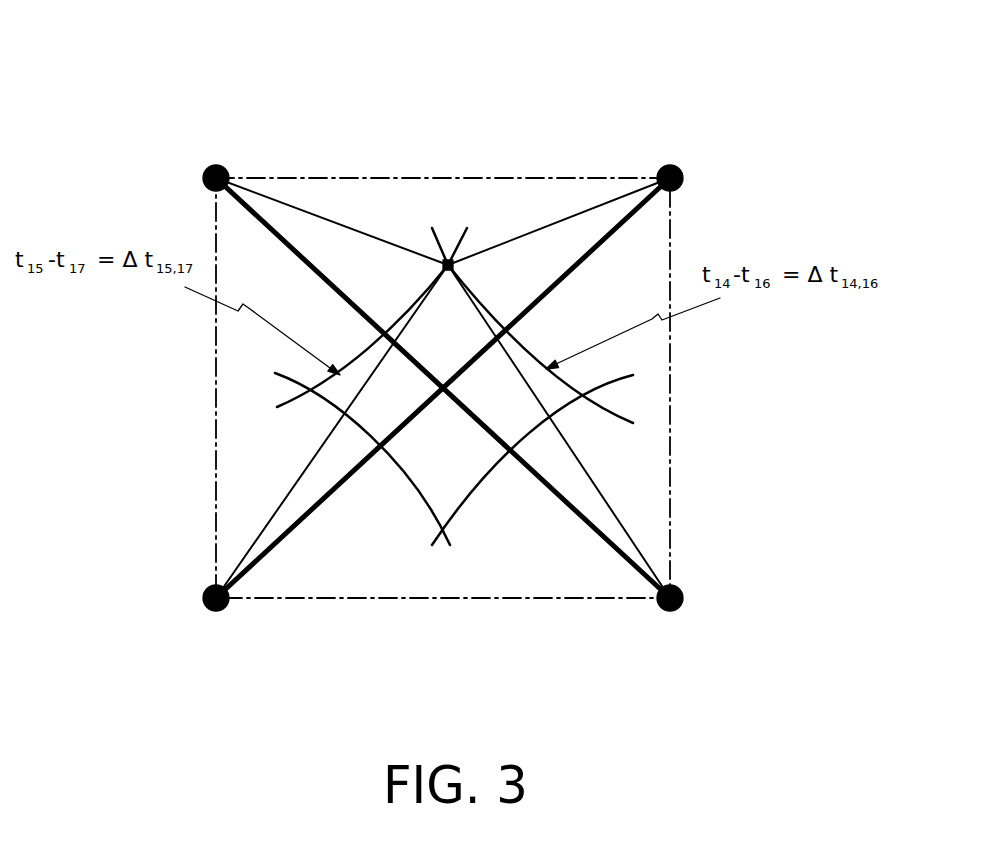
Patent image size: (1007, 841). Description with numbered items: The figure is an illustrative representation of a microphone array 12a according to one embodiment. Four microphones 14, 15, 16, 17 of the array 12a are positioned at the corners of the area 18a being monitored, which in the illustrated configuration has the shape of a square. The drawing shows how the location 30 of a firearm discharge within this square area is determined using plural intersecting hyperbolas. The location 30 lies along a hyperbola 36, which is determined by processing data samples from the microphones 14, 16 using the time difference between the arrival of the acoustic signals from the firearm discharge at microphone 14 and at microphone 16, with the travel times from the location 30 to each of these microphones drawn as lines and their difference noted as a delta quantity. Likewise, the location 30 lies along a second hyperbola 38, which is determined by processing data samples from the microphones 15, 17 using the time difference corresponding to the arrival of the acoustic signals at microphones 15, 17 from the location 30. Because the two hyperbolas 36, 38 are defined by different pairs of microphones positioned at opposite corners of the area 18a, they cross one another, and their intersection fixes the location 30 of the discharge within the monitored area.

The microphone array 12a is at (98, 104).
The microphone 14 is at (671, 165).
The microphone 15 is at (670, 612).
The microphone 16 is at (215, 612).
The microphone 17 is at (205, 168).
The area being monitored 18a is at (214, 418).
The location of a firearm discharge 30 is at (448, 258).
The hyperbola 36 is at (600, 410).
The hyperbola 38 is at (294, 402).